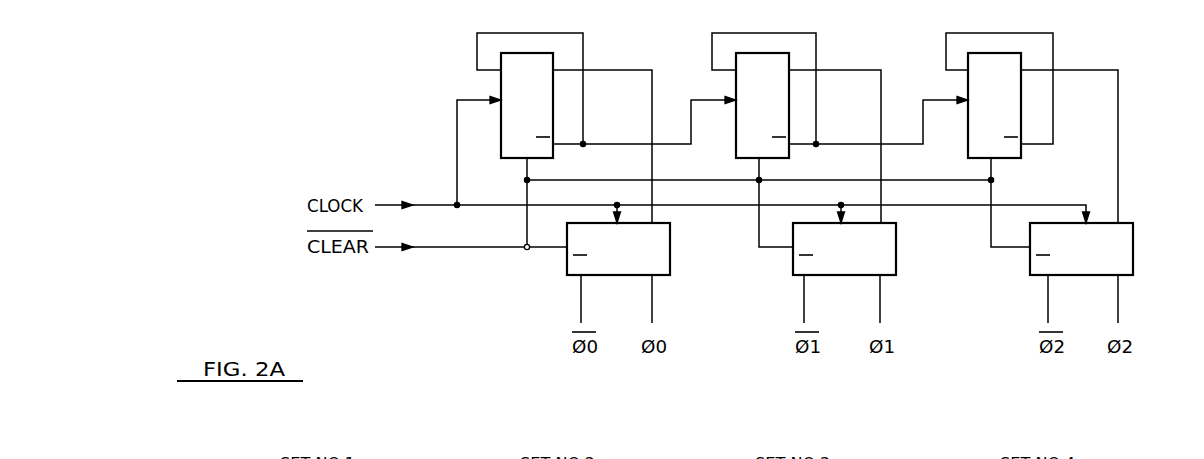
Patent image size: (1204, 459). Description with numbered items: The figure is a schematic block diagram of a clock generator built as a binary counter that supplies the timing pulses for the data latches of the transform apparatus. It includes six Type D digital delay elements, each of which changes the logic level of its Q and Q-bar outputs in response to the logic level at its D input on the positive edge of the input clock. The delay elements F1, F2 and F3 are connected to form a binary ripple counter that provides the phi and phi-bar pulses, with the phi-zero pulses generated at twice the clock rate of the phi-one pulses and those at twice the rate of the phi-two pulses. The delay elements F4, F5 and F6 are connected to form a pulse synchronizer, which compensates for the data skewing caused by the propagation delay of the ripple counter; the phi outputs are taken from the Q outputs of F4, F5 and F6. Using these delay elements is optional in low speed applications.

The delay element F1 is at (527, 105).
The delay element F2 is at (762, 105).
The delay element F3 is at (994, 105).
The delay element F4 is at (618, 248).
The delay element F5 is at (844, 248).
The delay element F6 is at (1081, 248).